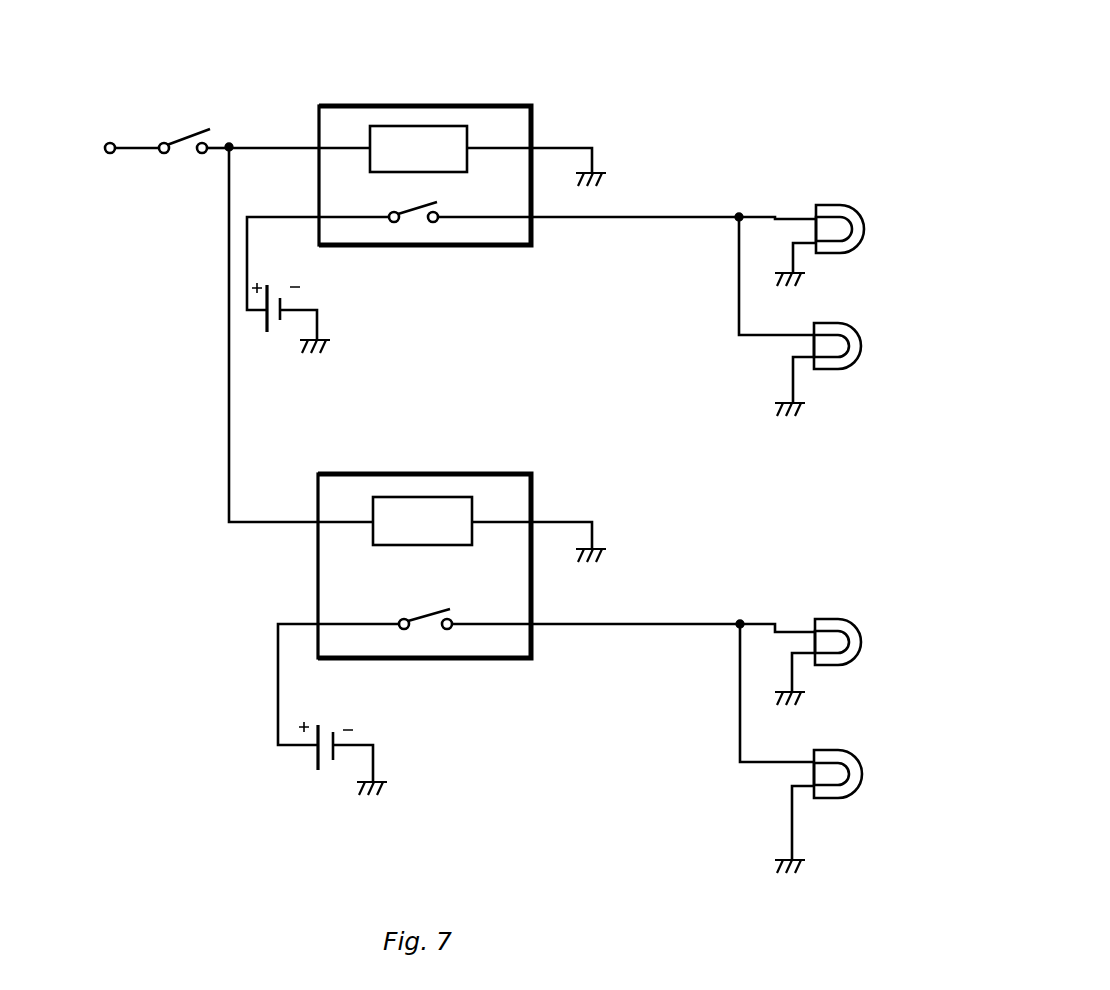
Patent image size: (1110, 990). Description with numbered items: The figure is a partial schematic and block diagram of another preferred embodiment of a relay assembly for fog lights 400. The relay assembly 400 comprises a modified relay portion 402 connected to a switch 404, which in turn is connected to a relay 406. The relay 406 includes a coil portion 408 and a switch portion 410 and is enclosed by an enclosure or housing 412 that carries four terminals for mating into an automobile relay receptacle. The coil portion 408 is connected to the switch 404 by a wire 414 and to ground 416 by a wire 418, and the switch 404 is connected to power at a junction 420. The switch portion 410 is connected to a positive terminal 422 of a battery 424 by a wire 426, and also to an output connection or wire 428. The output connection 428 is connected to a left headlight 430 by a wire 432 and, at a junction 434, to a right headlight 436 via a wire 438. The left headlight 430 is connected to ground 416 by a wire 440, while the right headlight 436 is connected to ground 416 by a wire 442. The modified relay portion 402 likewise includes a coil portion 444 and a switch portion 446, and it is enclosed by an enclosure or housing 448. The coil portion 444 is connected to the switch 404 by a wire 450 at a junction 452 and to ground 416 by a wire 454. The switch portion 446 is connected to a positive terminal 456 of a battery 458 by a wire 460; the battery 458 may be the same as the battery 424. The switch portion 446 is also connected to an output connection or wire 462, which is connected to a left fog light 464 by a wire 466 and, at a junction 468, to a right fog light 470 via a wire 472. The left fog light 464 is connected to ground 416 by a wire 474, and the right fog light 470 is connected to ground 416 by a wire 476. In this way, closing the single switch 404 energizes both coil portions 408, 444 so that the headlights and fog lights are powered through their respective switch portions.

The relay assembly for fog lights 400 is at (584, 389).
The modified relay portion 402 is at (424, 587).
The switch 404 is at (180, 123).
The relay 406 is at (413, 157).
The coil portion 408 is at (413, 126).
The switch portion 410 is at (417, 227).
The enclosure or housing 412 is at (337, 106).
The wire 414 is at (267, 147).
The ground 416 is at (601, 167).
The wire 418 is at (565, 143).
The junction 420 is at (106, 143).
The positive terminal 422 is at (240, 350).
The battery 424 is at (280, 350).
The wire 426 is at (247, 247).
The output connection or wire 428 is at (620, 219).
The left headlight 430 is at (878, 193).
The wire 432 is at (797, 217).
The junction 434 is at (739, 214).
The right headlight 436 is at (872, 335).
The wire 438 is at (737, 303).
The wire 440 is at (790, 262).
The wire 442 is at (793, 377).
The coil portion 444 is at (453, 497).
The switch portion 446 is at (428, 642).
The enclosure or housing 448 is at (382, 474).
The wire 450 is at (229, 466).
The junction 452 is at (226, 153).
The wire 454 is at (576, 520).
The positive terminal 456 is at (288, 791).
The battery 458 is at (330, 782).
The wire 460 is at (278, 673).
The output connection or wire 462 is at (607, 627).
The left fog light 464 is at (876, 606).
The wire 466 is at (800, 632).
The junction 468 is at (740, 623).
The right fog light 470 is at (888, 767).
The wire 472 is at (740, 710).
The wire 474 is at (792, 665).
The wire 476 is at (792, 805).